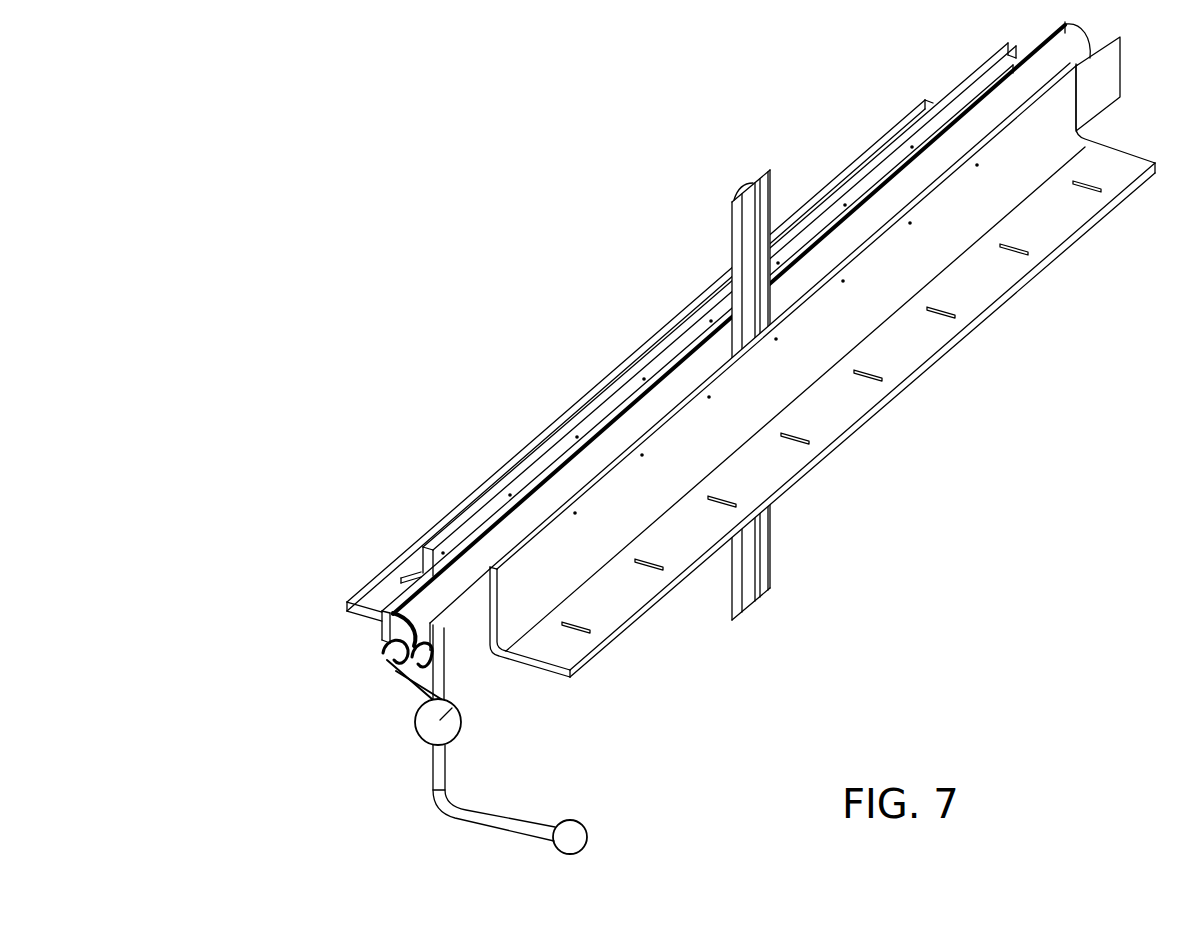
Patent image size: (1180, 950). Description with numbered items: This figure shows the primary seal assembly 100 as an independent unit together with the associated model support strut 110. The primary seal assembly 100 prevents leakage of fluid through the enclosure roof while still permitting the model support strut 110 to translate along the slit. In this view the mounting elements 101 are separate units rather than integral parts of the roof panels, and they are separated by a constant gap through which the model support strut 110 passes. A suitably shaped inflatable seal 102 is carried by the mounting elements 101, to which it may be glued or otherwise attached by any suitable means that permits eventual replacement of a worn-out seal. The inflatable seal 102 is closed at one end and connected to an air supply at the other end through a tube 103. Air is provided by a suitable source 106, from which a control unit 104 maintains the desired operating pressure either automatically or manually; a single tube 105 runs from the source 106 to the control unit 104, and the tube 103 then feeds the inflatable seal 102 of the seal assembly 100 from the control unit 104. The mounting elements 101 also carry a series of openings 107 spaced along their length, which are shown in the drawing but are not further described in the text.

The primary seal assembly 100 is at (610, 351).
The mounting elements 101 is at (630, 588).
The inflatable seal 102 is at (455, 633).
The tube 103 is at (420, 662).
The control unit 104 is at (424, 733).
The tube 105 is at (503, 825).
The source of air 106 is at (588, 837).
The slots 107 is at (803, 440).
The model support strut 110 is at (757, 280).